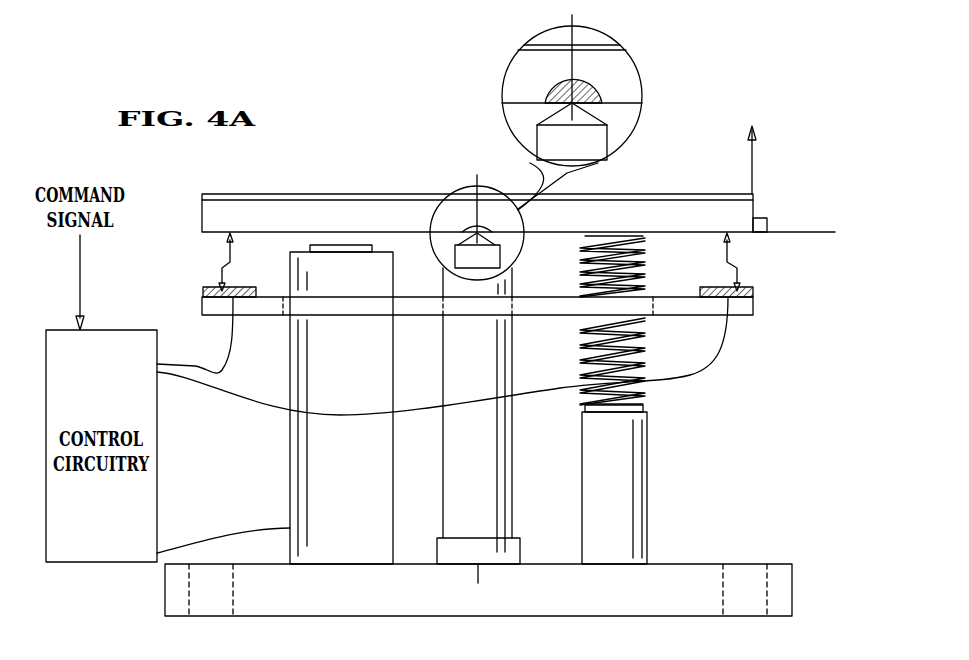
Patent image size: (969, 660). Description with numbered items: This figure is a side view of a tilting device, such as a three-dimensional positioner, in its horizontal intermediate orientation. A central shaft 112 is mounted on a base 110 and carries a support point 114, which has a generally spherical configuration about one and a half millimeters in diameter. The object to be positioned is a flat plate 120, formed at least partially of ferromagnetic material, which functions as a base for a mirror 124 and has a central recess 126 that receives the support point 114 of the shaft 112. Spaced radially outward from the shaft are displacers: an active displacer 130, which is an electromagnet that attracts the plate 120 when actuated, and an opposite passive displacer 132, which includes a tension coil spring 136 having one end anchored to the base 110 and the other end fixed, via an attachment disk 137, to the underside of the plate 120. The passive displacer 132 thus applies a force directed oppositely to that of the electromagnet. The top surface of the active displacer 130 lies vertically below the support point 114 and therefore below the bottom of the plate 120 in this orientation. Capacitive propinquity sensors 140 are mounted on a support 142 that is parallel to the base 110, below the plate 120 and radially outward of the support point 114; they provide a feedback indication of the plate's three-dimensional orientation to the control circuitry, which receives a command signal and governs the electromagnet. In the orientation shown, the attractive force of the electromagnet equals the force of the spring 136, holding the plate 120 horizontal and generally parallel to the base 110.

The base 110 is at (274, 603).
The central shaft 112 is at (462, 470).
The support point 114 is at (445, 236).
The flat plate 120 is at (217, 215).
The mirror 124 is at (315, 194).
The central recess 126 is at (603, 90).
The active displacer 130 is at (290, 463).
The passive displacer 132 is at (647, 487).
The tension coil spring 136 is at (642, 262).
The attachment disk 137 is at (635, 216).
The propinquity sensor 140 is at (203, 292).
The support 142 is at (750, 308).